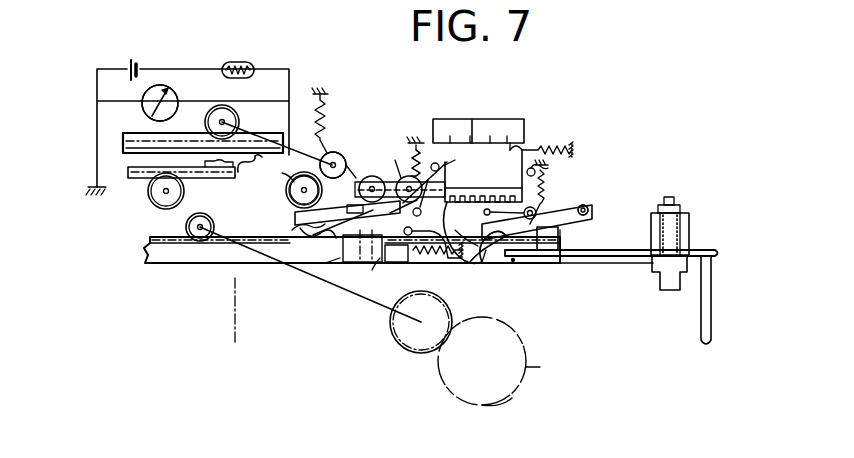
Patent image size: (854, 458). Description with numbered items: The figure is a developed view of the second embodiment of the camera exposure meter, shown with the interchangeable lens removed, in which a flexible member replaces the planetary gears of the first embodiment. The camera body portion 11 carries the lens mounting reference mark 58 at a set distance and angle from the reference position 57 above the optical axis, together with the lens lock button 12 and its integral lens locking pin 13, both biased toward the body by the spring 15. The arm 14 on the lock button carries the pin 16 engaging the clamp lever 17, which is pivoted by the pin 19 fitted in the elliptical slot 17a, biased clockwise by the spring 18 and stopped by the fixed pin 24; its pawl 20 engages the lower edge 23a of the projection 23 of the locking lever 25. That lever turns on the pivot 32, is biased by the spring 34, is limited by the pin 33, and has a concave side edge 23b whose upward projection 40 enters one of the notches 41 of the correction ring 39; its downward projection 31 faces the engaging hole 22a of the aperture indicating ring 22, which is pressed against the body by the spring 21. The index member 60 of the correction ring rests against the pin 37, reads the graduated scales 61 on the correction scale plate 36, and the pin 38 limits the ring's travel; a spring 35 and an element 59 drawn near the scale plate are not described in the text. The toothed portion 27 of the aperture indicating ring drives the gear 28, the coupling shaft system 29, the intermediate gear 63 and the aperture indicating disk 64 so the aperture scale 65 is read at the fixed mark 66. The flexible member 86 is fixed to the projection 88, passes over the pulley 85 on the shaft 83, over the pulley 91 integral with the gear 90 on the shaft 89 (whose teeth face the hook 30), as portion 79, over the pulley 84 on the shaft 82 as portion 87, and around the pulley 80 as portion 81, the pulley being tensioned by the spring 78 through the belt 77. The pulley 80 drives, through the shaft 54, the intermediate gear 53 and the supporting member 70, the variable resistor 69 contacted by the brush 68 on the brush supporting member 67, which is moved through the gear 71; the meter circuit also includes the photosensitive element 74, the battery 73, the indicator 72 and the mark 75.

The camera body portion 11 is at (590, 263).
The lens lock button 12 is at (668, 290).
The lens locking pin 13 is at (711, 298).
The arm 14 is at (626, 250).
The spring 15 is at (690, 229).
The pin 16 is at (548, 240).
The clamp lever 17 is at (577, 240).
The elliptical slot 17a is at (586, 208).
The spring 18 is at (540, 212).
The pin 19 is at (588, 212).
The pawl 20 is at (483, 254).
The spring 21 is at (436, 255).
The aperture indicating ring 22 is at (330, 263).
The engaging hole 22a is at (372, 270).
The projection 23 is at (463, 256).
The lower edge 23a is at (410, 258).
The side edge 23b is at (480, 248).
The fixed pin 24 is at (524, 213).
The locking lever 25 is at (373, 228).
The toothed portion 27 is at (162, 240).
The gear 28 is at (211, 224).
The coupling shaft system 29 is at (325, 266).
The hook 30 is at (303, 220).
The projection 31 is at (370, 240).
The pivot 32 is at (404, 232).
The pin 33 is at (413, 212).
The spring 34 is at (418, 147).
The spring 35 is at (548, 148).
The correction scale plate 36 is at (478, 119).
The pin 37 is at (542, 190).
The pin 38 is at (435, 163).
The correction ring 39 is at (468, 188).
The projection 40 is at (484, 212).
The notches 41 is at (440, 188).
The intermediate gear 53 is at (208, 122).
The shaft 54 is at (272, 148).
The reference position 57 is at (237, 330).
The lens mounting reference mark 58 is at (513, 263).
The scale end 59 is at (516, 140).
The index member 60 is at (508, 152).
The graduated scales 61 is at (470, 118).
The intermediate gear 63 is at (411, 338).
The aperture indicating disk 64 is at (506, 340).
The aperture scale 65 is at (498, 398).
The fixed mark 66 is at (526, 367).
The brush supporting member 67 is at (208, 178).
The brush 68 is at (243, 168).
The variable resistor 69 is at (123, 152).
The supporting member 70 is at (123, 133).
The gear 71 is at (155, 199).
The indicator 72 is at (148, 114).
The battery 73 is at (131, 68).
The photosensitive element 74 is at (232, 62).
The mark 75 is at (176, 82).
The belt 77 is at (332, 140).
The spring 78 is at (310, 118).
The flexible member portion 79 is at (353, 165).
The pulley 80 is at (325, 156).
The flexible member portion 81 is at (360, 180).
The shaft 82 is at (380, 167).
The shaft 83 is at (412, 156).
The pulley 84 is at (389, 140).
The pulley 85 is at (433, 172).
The flexible member 86 is at (330, 242).
The flexible member portion 87 is at (322, 186).
The projection 88 is at (329, 231).
The shaft 89 is at (294, 196).
The gear 90 is at (288, 188).
The pulley 91 is at (277, 167).